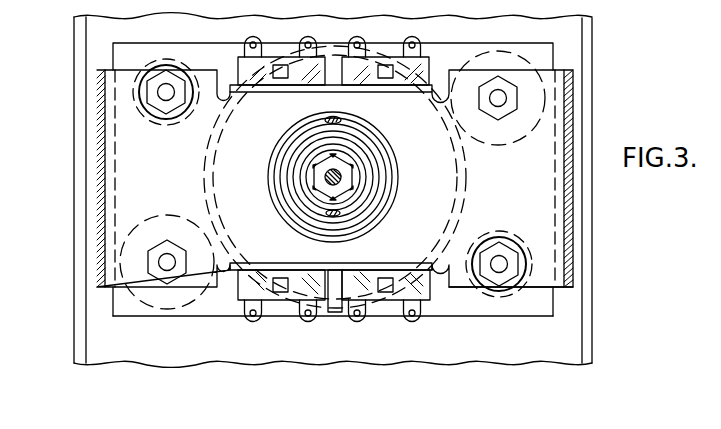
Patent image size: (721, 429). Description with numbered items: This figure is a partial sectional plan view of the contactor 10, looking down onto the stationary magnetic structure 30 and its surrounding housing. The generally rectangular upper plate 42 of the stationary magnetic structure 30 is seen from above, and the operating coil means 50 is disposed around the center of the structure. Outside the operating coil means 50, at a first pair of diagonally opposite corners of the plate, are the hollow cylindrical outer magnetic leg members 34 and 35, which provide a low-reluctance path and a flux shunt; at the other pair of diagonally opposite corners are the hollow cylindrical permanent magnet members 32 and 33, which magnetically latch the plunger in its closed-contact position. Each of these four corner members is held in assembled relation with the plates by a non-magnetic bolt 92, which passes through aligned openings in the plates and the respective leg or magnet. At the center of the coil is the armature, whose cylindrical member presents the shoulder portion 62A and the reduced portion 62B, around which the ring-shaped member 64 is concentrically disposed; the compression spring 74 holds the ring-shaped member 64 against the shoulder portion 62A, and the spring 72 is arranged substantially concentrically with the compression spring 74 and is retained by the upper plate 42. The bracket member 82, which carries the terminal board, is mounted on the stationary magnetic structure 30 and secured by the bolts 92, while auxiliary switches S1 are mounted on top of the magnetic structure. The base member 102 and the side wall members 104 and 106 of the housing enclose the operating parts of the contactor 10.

The contactor 10 is at (334, 207).
The stationary magnetic structure 30 is at (157, 344).
The permanent magnet member 32 is at (193, 302).
The permanent magnet member 33 is at (533, 138).
The outer magnetic leg member 34 is at (188, 118).
The outer magnetic leg member 35 is at (498, 238).
The upper plate 42 is at (482, 308).
The operating coil means 50 is at (481, 194).
The shoulder portion 62A is at (307, 188).
The portion of reduced cross-section 62B is at (308, 178).
The ring-shaped member 64 is at (362, 145).
The spring 72 is at (297, 137).
The compression spring 74 is at (367, 190).
The bracket member 82 is at (540, 280).
The non-magnetic bolt 92 is at (167, 97).
The base member 102 is at (522, 364).
The side wall member 104 is at (80, 200).
The right housing wall 106 is at (590, 243).
The auxiliary switch S1 is at (232, 62).